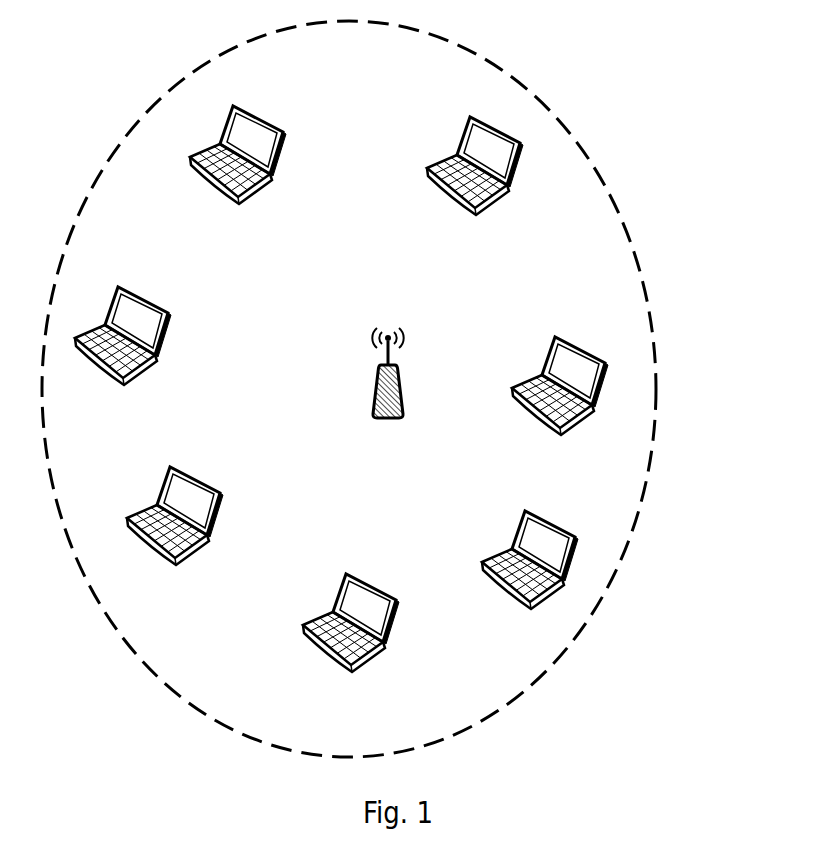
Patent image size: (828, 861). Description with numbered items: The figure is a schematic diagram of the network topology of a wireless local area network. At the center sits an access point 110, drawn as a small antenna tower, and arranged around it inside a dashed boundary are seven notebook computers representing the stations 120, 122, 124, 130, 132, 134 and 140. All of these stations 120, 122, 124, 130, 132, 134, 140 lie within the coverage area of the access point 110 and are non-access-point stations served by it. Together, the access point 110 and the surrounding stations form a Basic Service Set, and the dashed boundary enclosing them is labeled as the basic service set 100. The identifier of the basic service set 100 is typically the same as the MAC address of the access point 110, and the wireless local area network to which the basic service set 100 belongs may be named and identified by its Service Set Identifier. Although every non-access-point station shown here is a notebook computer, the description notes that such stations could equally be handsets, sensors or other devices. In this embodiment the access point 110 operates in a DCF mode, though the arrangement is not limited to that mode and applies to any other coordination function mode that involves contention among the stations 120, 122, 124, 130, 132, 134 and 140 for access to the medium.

The basic service set 100 is at (638, 257).
The access point 110 is at (387, 388).
The station 120 is at (558, 393).
The station 122 is at (526, 565).
The station 124 is at (350, 630).
The station 130 is at (172, 523).
The station 132 is at (121, 343).
The station 134 is at (237, 162).
The station 140 is at (472, 174).